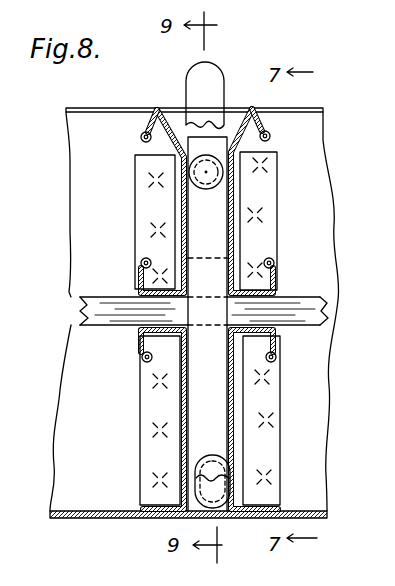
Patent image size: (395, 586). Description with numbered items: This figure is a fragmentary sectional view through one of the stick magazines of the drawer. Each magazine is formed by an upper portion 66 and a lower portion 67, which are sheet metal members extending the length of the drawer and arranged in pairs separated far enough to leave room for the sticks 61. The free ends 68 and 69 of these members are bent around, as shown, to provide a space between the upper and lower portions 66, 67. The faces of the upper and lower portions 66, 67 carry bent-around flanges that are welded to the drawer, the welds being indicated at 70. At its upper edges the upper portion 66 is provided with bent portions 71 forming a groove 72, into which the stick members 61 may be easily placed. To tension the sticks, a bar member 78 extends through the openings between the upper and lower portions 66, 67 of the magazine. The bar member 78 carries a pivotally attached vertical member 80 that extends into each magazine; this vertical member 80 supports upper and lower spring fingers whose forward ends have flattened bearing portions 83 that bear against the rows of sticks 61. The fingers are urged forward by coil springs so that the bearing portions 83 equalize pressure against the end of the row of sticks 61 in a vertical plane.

The stick 61 is at (212, 72).
The upper portion 66 is at (182, 208).
The lower portion 67 is at (182, 406).
The free end 68 is at (141, 356).
The free end 69 is at (140, 262).
The weld 70 is at (152, 230).
The bent portion 71 is at (270, 128).
The groove 72 is at (175, 112).
The bar member 78 is at (73, 312).
The vertical member 80 is at (190, 430).
The flattened bearing portion 83 is at (189, 172).